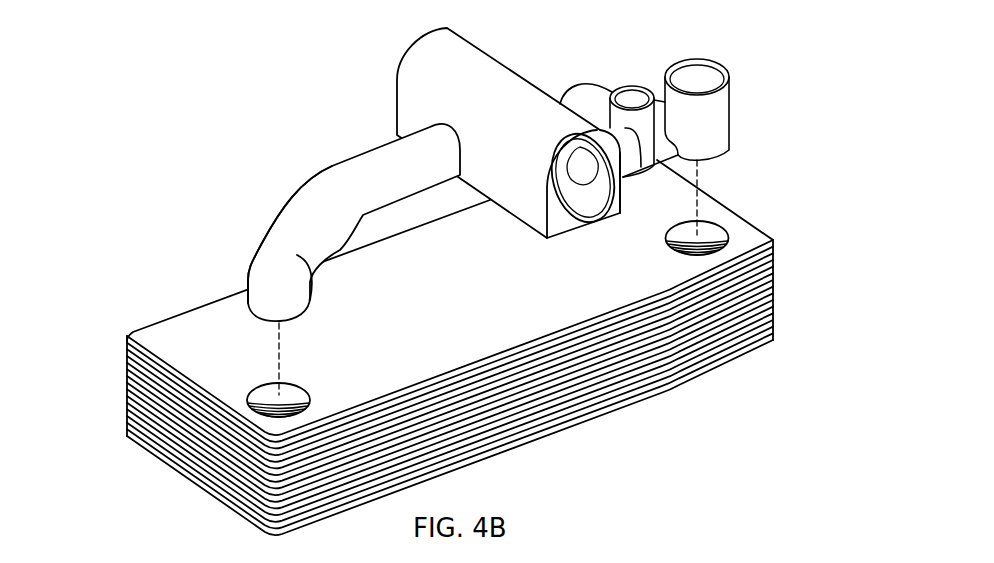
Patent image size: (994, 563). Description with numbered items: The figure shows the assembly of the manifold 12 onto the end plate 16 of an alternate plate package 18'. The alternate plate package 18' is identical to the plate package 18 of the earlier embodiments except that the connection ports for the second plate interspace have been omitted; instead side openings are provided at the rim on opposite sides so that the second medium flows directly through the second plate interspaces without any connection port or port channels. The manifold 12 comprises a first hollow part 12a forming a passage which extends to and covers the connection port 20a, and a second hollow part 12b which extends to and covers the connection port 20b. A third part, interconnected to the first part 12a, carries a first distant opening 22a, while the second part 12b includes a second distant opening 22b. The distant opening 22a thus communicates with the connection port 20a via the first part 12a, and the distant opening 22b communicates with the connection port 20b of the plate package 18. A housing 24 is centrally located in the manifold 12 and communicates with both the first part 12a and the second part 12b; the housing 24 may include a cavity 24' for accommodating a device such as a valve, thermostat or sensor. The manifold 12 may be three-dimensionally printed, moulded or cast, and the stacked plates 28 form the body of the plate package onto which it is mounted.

The manifold 12 is at (307, 150).
The first hollow part 12a is at (296, 222).
The second hollow part 12b is at (573, 86).
The end plate 16 is at (373, 330).
The plate package 18 is at (420, 269).
The alternate plate package 18' is at (819, 192).
The connection port 20a is at (270, 407).
The connection port 20b is at (703, 246).
The first distant opening 22a is at (628, 95).
The second distant opening 22b is at (695, 75).
The housing 24 is at (506, 122).
The cavity 24' is at (488, 138).
The stacked plates 28 is at (577, 396).